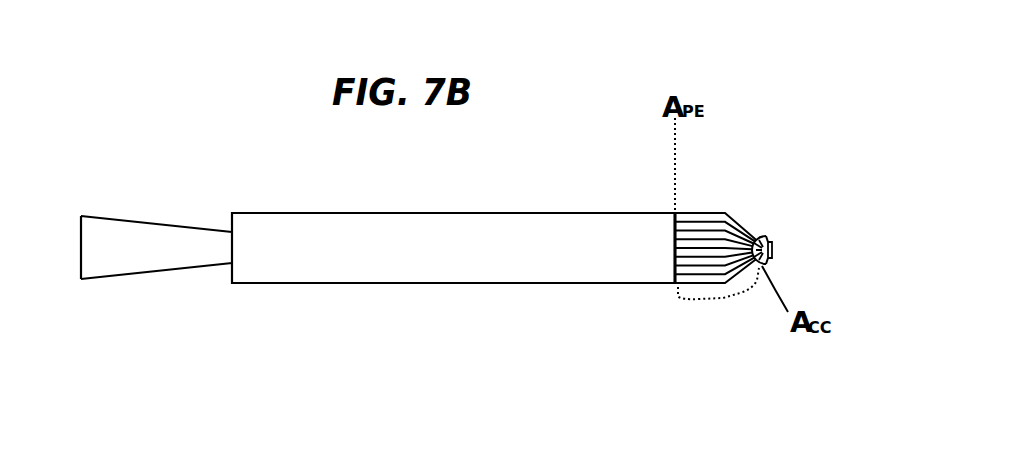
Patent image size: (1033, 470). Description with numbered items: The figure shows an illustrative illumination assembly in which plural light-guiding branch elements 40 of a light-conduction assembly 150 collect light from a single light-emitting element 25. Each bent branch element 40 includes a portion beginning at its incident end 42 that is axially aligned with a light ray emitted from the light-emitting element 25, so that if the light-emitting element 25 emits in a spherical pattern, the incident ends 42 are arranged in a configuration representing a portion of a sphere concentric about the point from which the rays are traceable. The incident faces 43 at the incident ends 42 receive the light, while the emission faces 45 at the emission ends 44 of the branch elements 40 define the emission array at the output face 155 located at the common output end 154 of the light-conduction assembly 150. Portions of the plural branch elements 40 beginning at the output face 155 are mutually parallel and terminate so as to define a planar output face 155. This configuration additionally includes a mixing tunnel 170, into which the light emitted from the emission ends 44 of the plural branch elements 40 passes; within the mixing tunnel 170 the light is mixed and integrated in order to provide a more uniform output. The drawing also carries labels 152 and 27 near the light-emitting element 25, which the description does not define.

The mixing tunnel 170 is at (475, 262).
The output face 155 is at (673, 232).
The common output end 154 is at (680, 213).
The light-conduction assembly 150 is at (722, 295).
The incident end 42 is at (753, 238).
The distal emission surface 152 is at (766, 236).
The incident face 43 is at (771, 241).
The light-emitting element 25 is at (773, 243).
The treatment surface 27 is at (773, 258).
The light-guiding branch element 40 is at (693, 282).
The emission end 44 is at (678, 286).
The emission face 45 is at (675, 271).